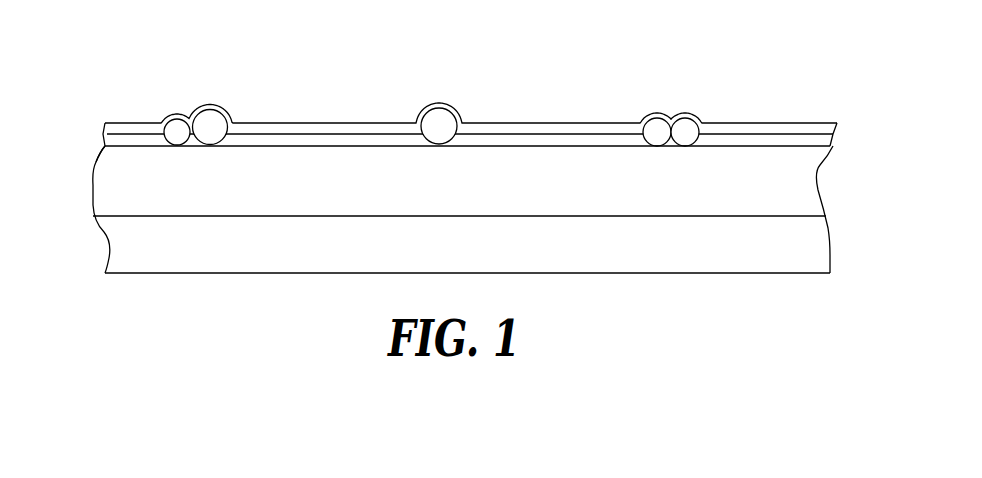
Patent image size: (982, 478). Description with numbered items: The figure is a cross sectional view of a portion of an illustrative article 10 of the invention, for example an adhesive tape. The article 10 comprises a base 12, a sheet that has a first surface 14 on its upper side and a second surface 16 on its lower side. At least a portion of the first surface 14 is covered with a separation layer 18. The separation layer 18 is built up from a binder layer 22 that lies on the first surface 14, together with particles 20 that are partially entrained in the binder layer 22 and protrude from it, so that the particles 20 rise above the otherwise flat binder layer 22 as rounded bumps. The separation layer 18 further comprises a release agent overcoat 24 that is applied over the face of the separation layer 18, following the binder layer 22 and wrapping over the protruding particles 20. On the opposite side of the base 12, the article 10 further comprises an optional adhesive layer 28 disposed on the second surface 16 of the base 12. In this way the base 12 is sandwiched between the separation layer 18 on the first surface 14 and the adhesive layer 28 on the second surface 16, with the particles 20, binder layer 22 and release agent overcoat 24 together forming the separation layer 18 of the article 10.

The article 10 is at (152, 43).
The base 12 is at (800, 183).
The first surface 14 is at (753, 147).
The second surface 16 is at (788, 218).
The separation layer 18 is at (440, 97).
The particles 20 is at (177, 128).
The binder layer 22 is at (323, 138).
The release agent overcoat 24 is at (435, 104).
The adhesive layer 28 is at (120, 247).